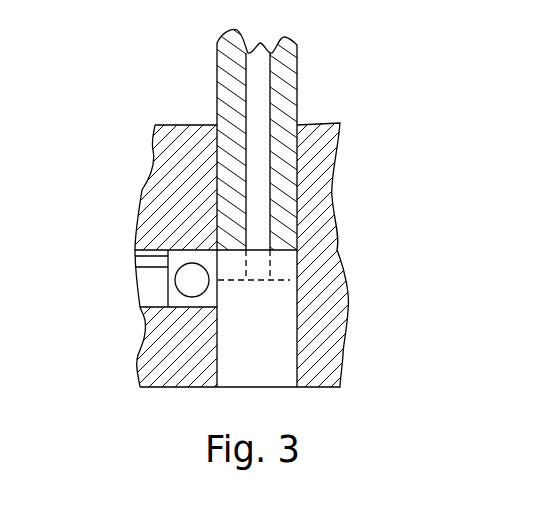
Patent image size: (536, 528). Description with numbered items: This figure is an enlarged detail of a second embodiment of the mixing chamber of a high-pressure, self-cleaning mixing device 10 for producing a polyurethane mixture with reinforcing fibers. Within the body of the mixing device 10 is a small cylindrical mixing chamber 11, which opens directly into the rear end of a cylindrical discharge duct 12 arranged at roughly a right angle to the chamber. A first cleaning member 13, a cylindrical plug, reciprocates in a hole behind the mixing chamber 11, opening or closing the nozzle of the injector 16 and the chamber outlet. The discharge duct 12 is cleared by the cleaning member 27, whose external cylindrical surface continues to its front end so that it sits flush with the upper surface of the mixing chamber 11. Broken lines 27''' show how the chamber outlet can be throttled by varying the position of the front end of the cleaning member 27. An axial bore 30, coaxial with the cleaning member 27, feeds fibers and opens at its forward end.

The mixing device 10 is at (328, 165).
The mixing chamber 11 is at (147, 375).
The discharge duct 12 is at (265, 361).
The first cleaning member 13 is at (155, 290).
The injector 16 is at (175, 280).
The cleaning member 27 is at (314, 143).
The broken lines 27''' is at (314, 252).
The axial bore 30 is at (256, 87).